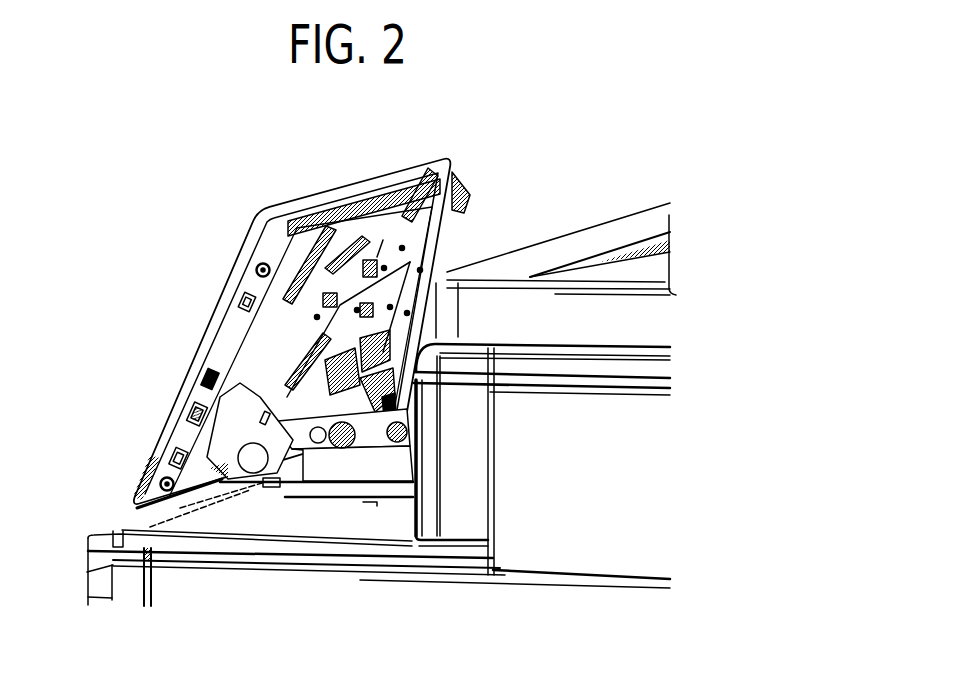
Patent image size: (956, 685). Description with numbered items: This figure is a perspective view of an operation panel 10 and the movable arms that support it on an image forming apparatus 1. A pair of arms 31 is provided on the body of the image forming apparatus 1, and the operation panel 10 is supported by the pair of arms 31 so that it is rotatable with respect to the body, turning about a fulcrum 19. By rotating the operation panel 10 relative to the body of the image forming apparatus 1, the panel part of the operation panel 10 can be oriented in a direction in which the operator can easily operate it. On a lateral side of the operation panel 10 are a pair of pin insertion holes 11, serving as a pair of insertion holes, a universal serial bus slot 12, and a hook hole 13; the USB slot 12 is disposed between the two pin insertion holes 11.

The image forming apparatus 1 is at (578, 201).
The operation panel 10 is at (243, 210).
The pin insertion holes 11 is at (257, 270).
The USB slot 12 is at (193, 413).
The hook hole 13 is at (207, 375).
The fulcrum 19 is at (257, 466).
The arms 31 is at (342, 468).